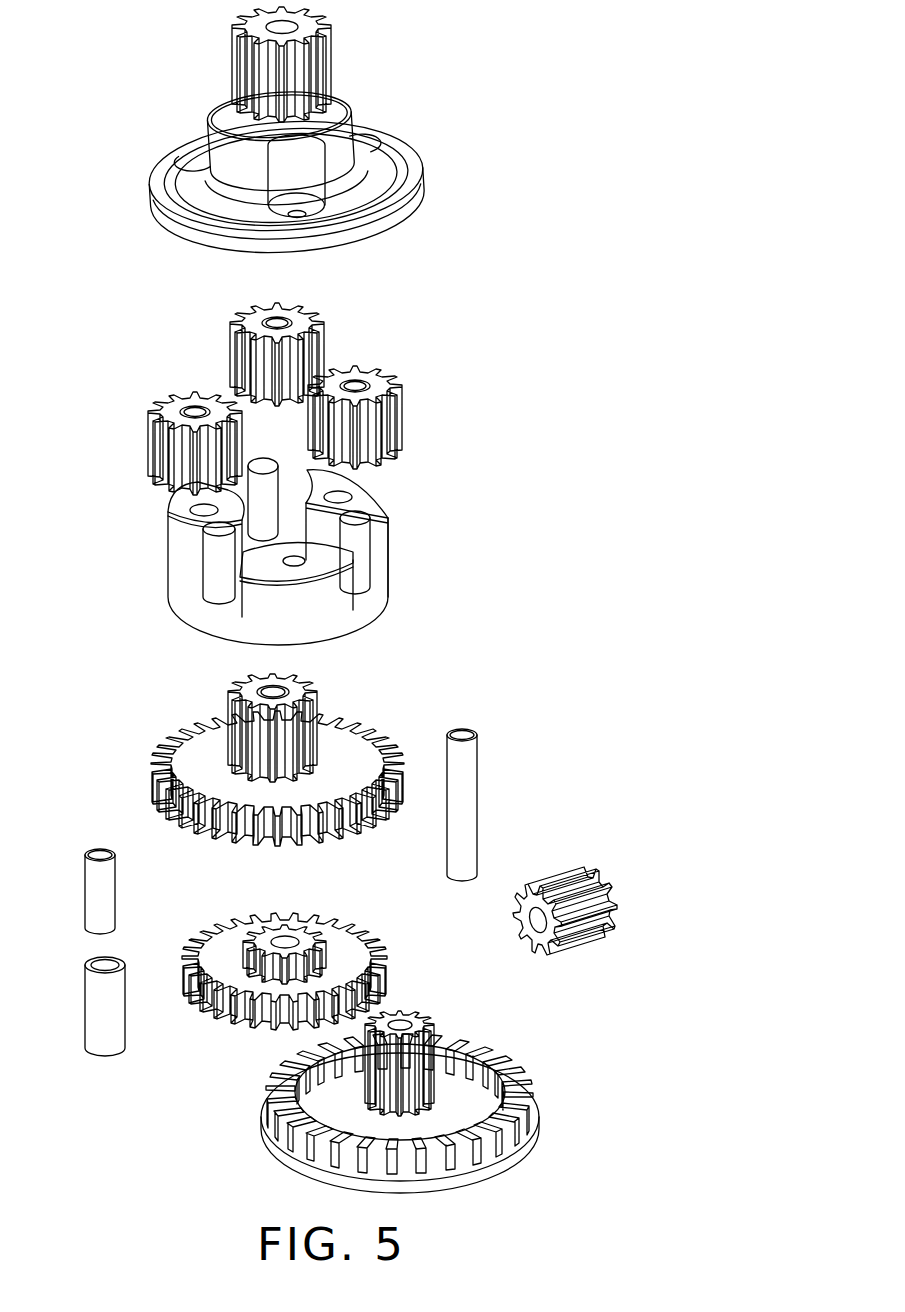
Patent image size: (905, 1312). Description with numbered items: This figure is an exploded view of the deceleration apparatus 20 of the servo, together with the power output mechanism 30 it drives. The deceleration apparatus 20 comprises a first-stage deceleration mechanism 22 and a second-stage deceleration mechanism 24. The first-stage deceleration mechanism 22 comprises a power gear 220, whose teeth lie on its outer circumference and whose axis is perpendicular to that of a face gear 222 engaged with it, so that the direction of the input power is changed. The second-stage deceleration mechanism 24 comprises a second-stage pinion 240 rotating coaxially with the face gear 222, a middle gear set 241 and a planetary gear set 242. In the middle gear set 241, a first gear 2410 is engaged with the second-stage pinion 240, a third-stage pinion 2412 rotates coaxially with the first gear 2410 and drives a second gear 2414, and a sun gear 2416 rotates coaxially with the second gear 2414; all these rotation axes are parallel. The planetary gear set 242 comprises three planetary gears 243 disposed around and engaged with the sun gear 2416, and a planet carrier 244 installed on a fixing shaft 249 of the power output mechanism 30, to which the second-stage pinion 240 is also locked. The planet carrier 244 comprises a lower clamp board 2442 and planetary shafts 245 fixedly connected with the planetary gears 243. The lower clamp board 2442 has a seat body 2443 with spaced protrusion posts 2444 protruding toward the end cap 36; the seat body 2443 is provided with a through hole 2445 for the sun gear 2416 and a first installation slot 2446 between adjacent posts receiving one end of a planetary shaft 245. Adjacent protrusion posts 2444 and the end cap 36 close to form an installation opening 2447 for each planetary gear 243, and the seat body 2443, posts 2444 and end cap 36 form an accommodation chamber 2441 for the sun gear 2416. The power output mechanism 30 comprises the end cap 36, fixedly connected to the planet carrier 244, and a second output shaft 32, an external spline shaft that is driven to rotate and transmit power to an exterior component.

The deceleration apparatus 20 is at (106, 384).
The first-stage deceleration mechanism 22 is at (454, 1030).
The second-stage deceleration mechanism 24 is at (329, 498).
The power output mechanism 30 is at (322, 133).
The second output shaft 32 is at (330, 78).
The end cap 36 is at (357, 221).
The power gear 220 is at (558, 958).
The face gear 222 is at (425, 1113).
The second-stage pinion 240 is at (390, 1078).
The middle gear set 241 is at (240, 795).
The planetary gear set 242 is at (333, 473).
The planetary gear 243 is at (297, 324).
The planet carrier 244 is at (327, 576).
The planetary shaft 245 is at (216, 564).
The fixing shaft 249 is at (462, 815).
The first gear 2410 is at (349, 964).
The third-stage pinion 2412 is at (262, 937).
The second gear 2414 is at (200, 787).
The sun gear 2416 is at (235, 703).
The accommodation chamber 2441 is at (318, 529).
The lower clamp board 2442 is at (310, 566).
The seat body 2443 is at (369, 609).
The protrusion post 2444 is at (318, 568).
The through hole 2445 is at (240, 558).
The first installation slot 2446 is at (186, 576).
The installation opening 2447 is at (231, 599).